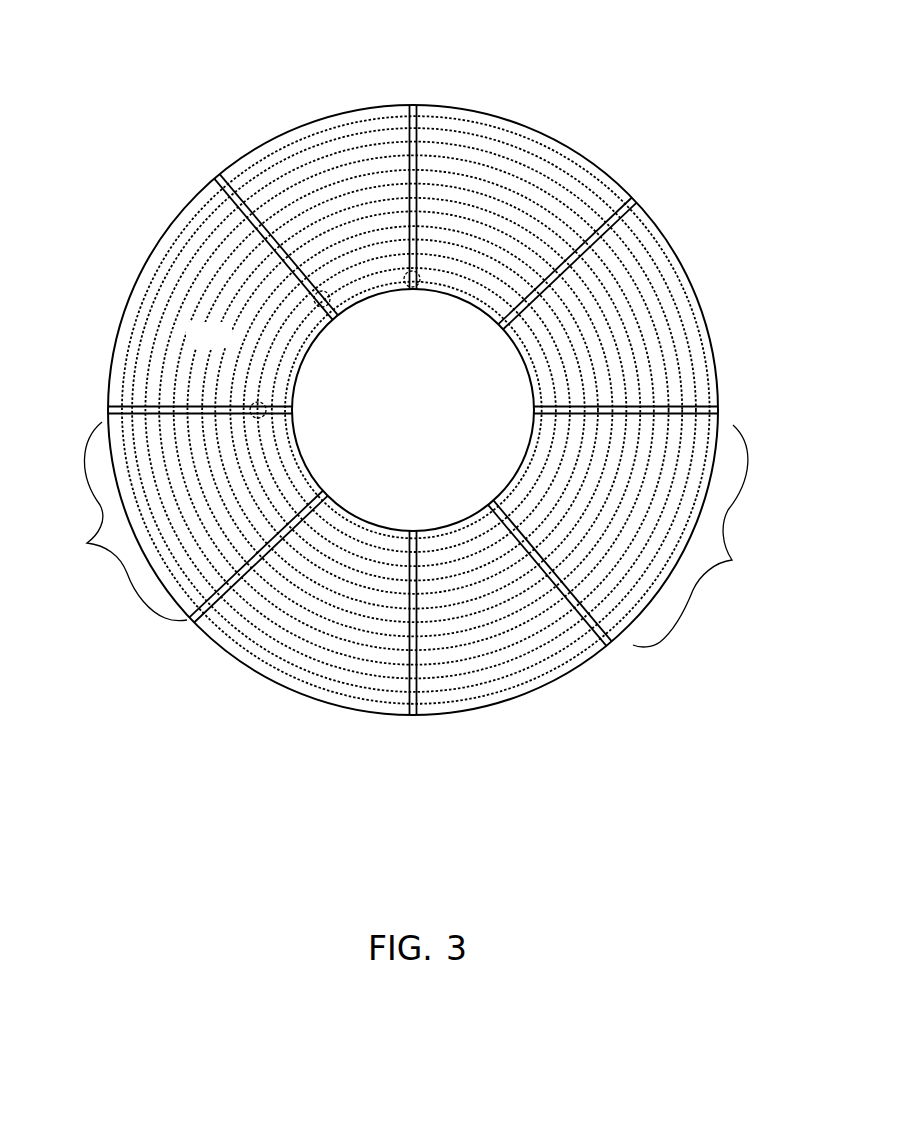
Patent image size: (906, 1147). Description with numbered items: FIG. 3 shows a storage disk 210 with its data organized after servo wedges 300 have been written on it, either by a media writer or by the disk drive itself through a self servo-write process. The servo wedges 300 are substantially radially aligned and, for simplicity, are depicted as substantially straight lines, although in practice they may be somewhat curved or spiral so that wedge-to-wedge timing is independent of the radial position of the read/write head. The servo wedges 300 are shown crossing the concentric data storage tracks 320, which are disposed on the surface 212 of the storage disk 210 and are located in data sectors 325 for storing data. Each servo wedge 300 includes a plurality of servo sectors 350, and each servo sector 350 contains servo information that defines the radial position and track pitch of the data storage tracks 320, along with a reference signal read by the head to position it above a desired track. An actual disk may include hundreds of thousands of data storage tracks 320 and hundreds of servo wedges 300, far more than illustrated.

The storage disk 210 is at (201, 192).
The surface 212 is at (209, 335).
The servo wedges 300 is at (413, 73).
The data storage tracks 320 is at (660, 240).
The data sectors 325 is at (87, 543).
The servo sectors 350 is at (419, 289).